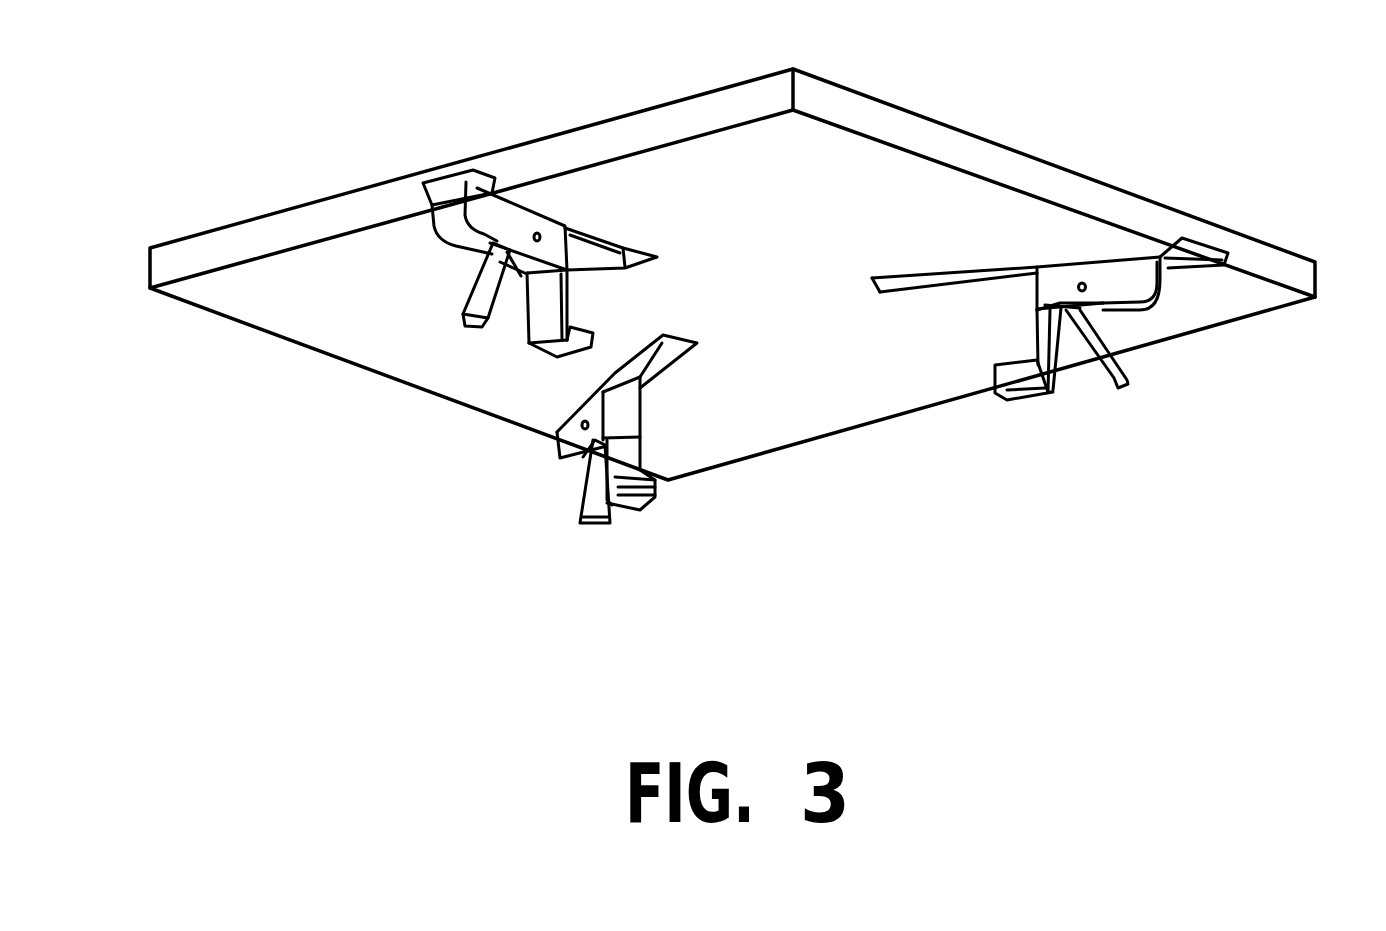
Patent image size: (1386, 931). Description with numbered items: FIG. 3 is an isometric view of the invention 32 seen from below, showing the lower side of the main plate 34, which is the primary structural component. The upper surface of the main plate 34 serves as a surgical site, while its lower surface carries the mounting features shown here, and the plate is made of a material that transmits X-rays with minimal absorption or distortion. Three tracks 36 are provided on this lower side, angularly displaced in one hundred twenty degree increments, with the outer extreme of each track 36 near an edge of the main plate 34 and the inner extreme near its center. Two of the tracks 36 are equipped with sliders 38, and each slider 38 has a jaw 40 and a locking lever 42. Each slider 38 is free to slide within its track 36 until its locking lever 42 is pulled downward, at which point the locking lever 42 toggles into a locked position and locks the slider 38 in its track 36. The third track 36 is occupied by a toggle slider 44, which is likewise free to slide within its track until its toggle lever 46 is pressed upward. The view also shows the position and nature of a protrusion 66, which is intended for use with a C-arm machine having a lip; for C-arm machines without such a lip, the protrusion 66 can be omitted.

The attachment assembly 32 is at (302, 545).
The main plate 34 is at (652, 108).
The track 36 is at (1203, 245).
The slider 38 is at (555, 452).
The jaw 40 is at (642, 513).
The locking lever 42 is at (1112, 373).
The toggle slider 44 is at (493, 217).
The toggle lever 46 is at (462, 318).
The protrusion 66 is at (600, 337).